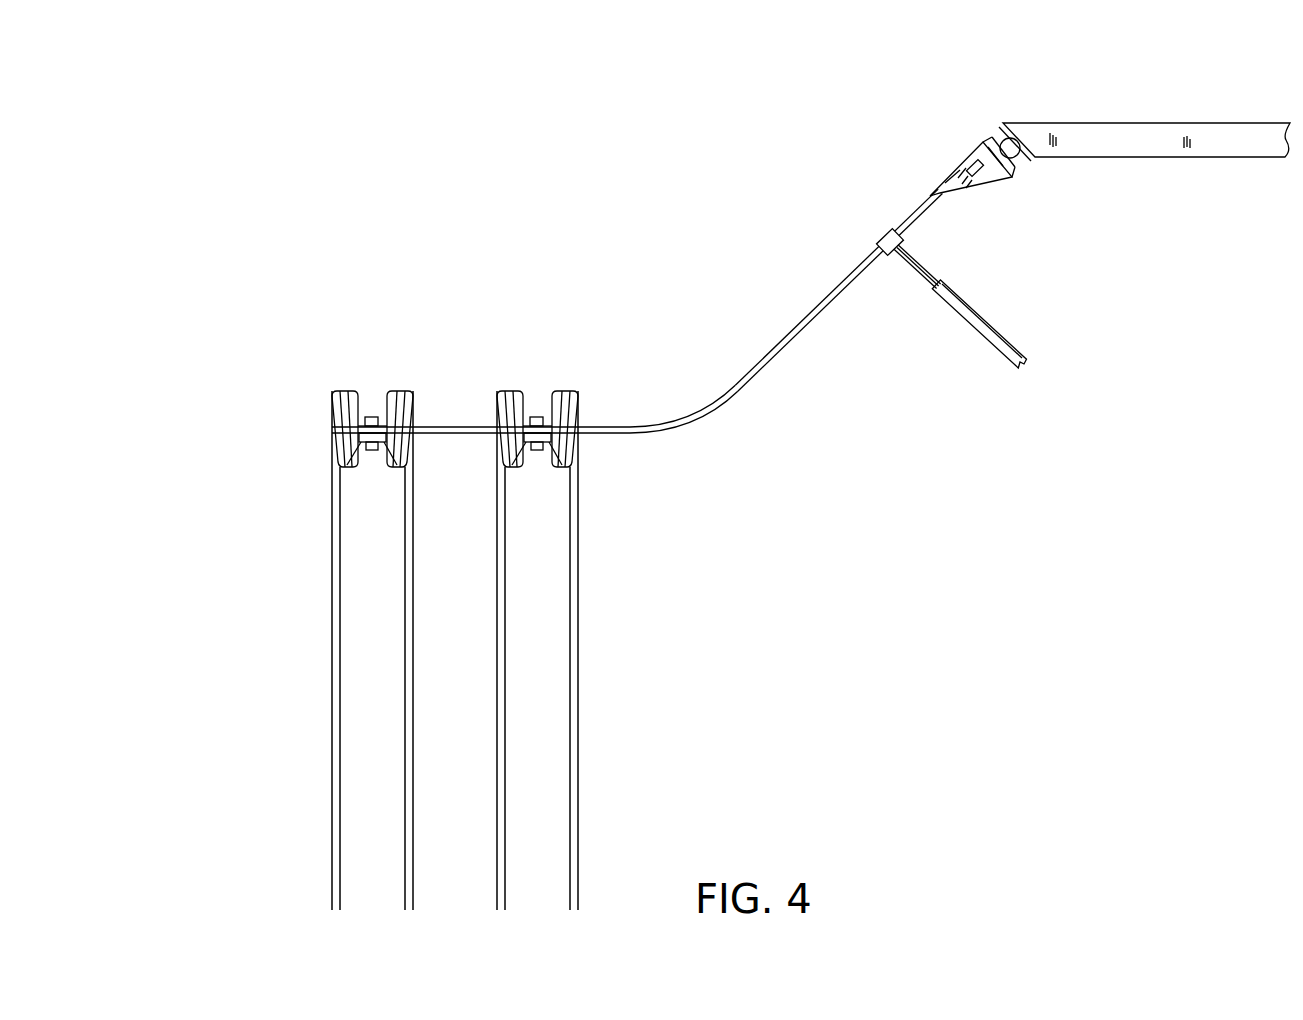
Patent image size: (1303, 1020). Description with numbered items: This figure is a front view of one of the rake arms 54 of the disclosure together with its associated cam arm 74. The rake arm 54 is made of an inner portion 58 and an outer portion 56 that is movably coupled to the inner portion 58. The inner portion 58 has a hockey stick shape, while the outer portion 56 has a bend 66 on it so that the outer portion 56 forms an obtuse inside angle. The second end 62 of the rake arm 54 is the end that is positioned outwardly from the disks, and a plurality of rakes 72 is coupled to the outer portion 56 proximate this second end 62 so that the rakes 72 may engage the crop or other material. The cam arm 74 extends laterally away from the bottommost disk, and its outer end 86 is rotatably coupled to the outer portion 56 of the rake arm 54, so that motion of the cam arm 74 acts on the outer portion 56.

The rake arm 54 is at (1022, 96).
The outer portion 56 is at (785, 345).
The inner portion 58 is at (1196, 122).
The second end 62 is at (330, 430).
The bend 66 is at (700, 433).
The rake 72 is at (575, 667).
The cam arm 74 is at (995, 350).
The outer end 86 is at (882, 235).